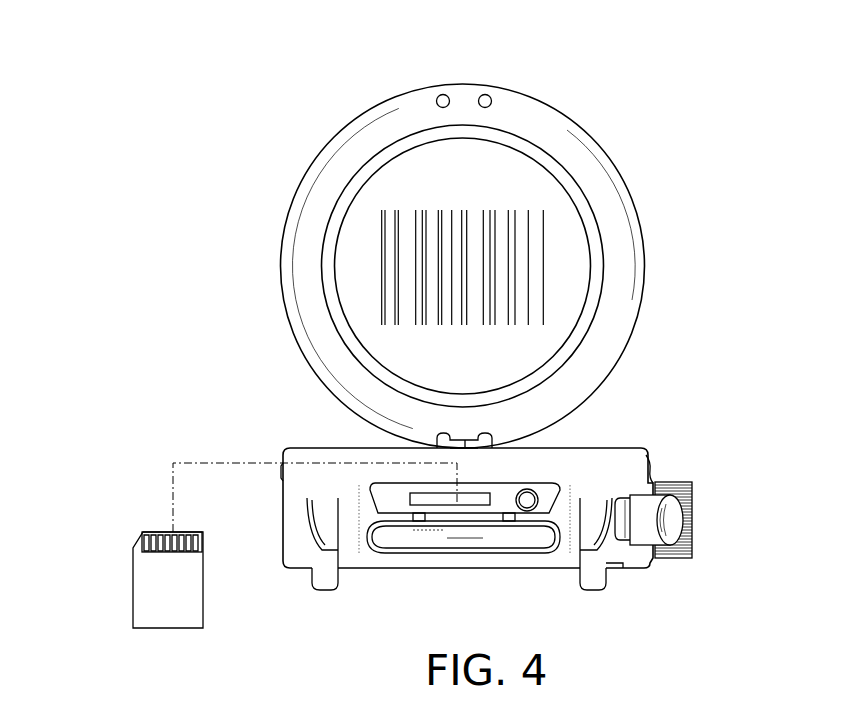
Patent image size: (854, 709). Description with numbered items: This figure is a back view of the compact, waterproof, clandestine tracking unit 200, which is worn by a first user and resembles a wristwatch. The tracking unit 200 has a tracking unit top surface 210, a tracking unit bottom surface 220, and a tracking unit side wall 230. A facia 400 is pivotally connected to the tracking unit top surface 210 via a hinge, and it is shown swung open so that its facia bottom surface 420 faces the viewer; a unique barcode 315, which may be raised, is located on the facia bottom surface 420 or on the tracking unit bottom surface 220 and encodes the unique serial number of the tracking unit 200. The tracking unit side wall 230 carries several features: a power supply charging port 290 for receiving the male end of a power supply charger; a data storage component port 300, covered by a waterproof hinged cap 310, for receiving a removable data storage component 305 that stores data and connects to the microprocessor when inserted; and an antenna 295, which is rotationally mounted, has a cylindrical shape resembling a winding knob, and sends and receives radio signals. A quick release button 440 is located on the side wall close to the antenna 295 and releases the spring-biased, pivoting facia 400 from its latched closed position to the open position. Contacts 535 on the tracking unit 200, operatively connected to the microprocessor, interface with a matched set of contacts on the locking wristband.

The tracking unit 200 is at (718, 270).
The tracking unit top surface 210 is at (318, 448).
The tracking unit bottom surface 220 is at (623, 570).
The tracking unit side wall 230 is at (613, 470).
The power supply charging port 290 is at (527, 500).
The antenna 295 is at (688, 487).
The data storage component port 300 is at (393, 497).
The removable data storage component 305 is at (160, 597).
The waterproof hinged cap 310 is at (410, 540).
The unique barcode 315 is at (514, 245).
The facia 400 is at (345, 122).
The facia bottom surface 420 is at (317, 218).
The quick release button 440 is at (675, 517).
The contacts 535 is at (583, 572).